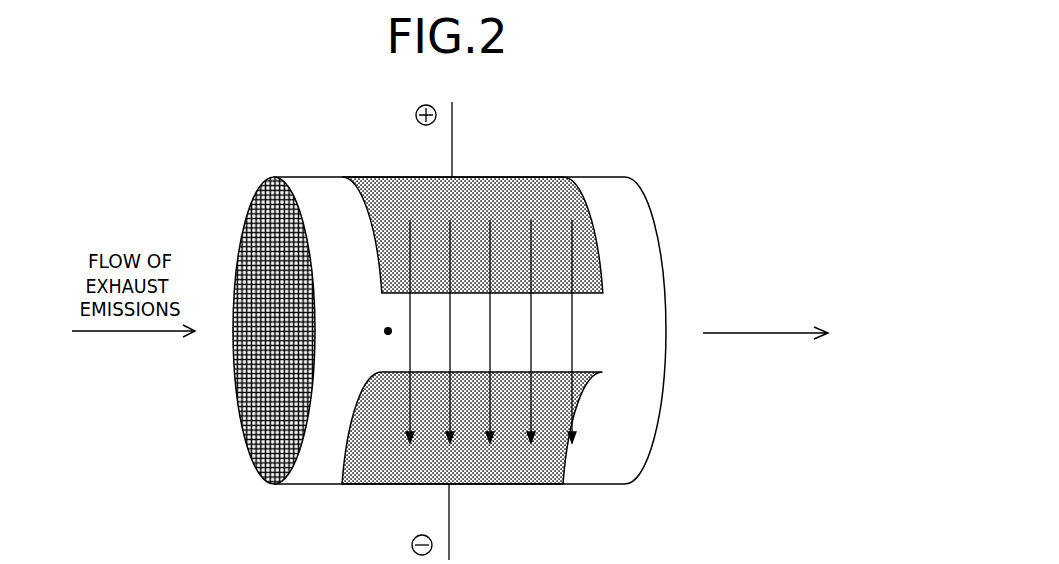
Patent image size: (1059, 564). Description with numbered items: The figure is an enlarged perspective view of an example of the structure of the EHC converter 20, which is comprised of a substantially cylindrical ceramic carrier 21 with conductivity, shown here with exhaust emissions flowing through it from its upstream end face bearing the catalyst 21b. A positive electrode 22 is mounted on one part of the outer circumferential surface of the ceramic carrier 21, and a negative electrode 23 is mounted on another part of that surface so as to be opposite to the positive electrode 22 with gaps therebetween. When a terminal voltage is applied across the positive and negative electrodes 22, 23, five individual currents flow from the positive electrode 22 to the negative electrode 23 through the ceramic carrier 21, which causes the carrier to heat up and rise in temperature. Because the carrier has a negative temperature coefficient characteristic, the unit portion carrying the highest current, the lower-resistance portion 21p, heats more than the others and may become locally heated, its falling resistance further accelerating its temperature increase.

The EHC converter 20 is at (682, 152).
The ceramic carrier 21 is at (604, 188).
The catalyst 21b is at (240, 212).
The lower-resistance portion 21p is at (386, 330).
The positive electrode 22 is at (369, 187).
The negative electrode 23 is at (374, 484).